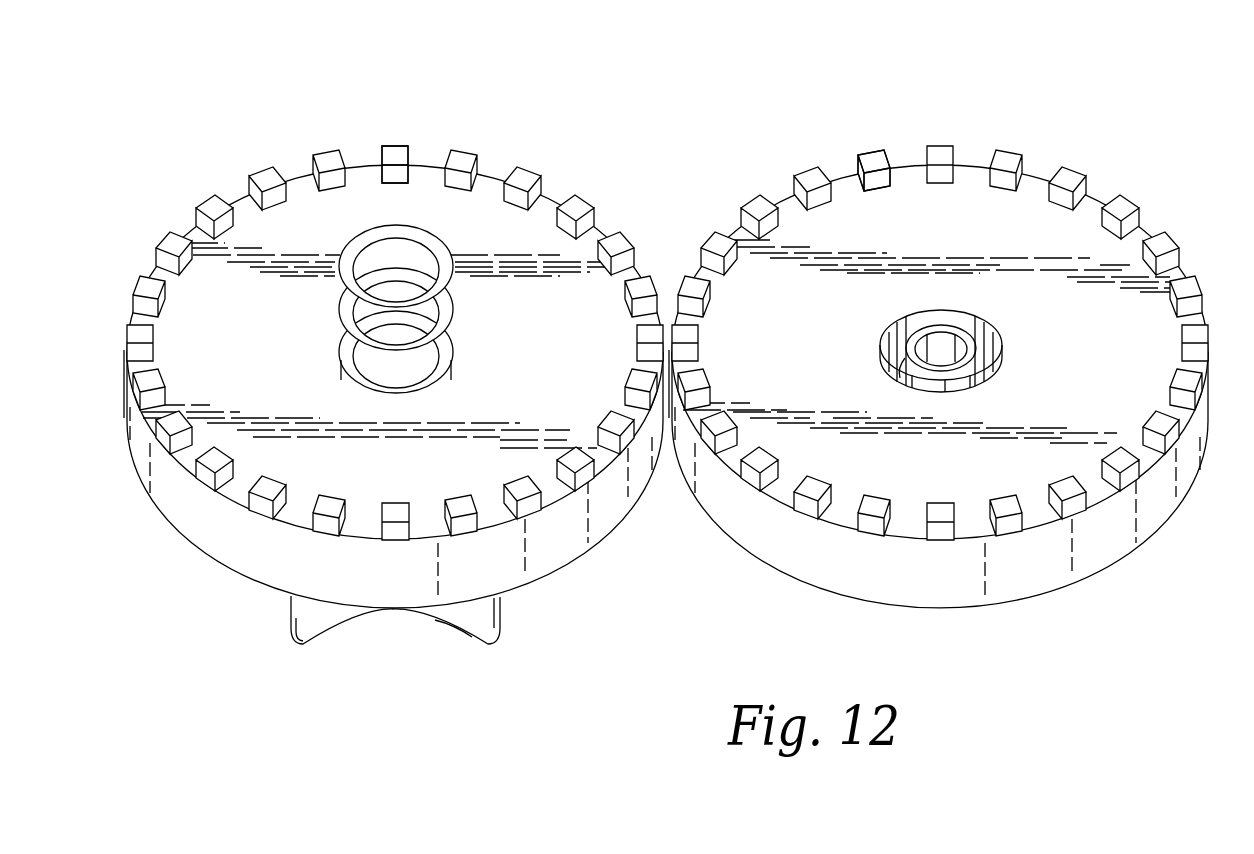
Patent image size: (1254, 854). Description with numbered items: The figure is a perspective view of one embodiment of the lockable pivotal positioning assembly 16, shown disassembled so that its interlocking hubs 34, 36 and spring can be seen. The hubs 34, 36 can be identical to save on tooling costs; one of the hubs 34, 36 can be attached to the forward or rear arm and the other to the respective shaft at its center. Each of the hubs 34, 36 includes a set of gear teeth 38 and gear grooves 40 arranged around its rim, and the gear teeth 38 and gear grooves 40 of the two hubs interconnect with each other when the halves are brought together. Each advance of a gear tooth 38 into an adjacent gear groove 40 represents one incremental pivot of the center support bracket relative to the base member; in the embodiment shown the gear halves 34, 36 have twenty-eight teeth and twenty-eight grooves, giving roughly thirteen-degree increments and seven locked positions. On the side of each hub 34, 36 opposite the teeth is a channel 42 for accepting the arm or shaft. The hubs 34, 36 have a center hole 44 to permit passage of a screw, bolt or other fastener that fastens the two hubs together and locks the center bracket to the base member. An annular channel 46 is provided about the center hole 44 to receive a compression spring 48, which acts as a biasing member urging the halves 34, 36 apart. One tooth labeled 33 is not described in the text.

The lockable pivotal positioning assembly 16 is at (1016, 118).
The tooth 33 is at (875, 157).
The hub 34 is at (561, 587).
The hub 36 is at (1114, 592).
The gear tooth 38 is at (394, 147).
The gear groove 40 is at (362, 160).
The channel 42 is at (391, 610).
The center hole 44 is at (943, 347).
The annular channel 46 is at (905, 358).
The compression spring 48 is at (425, 232).